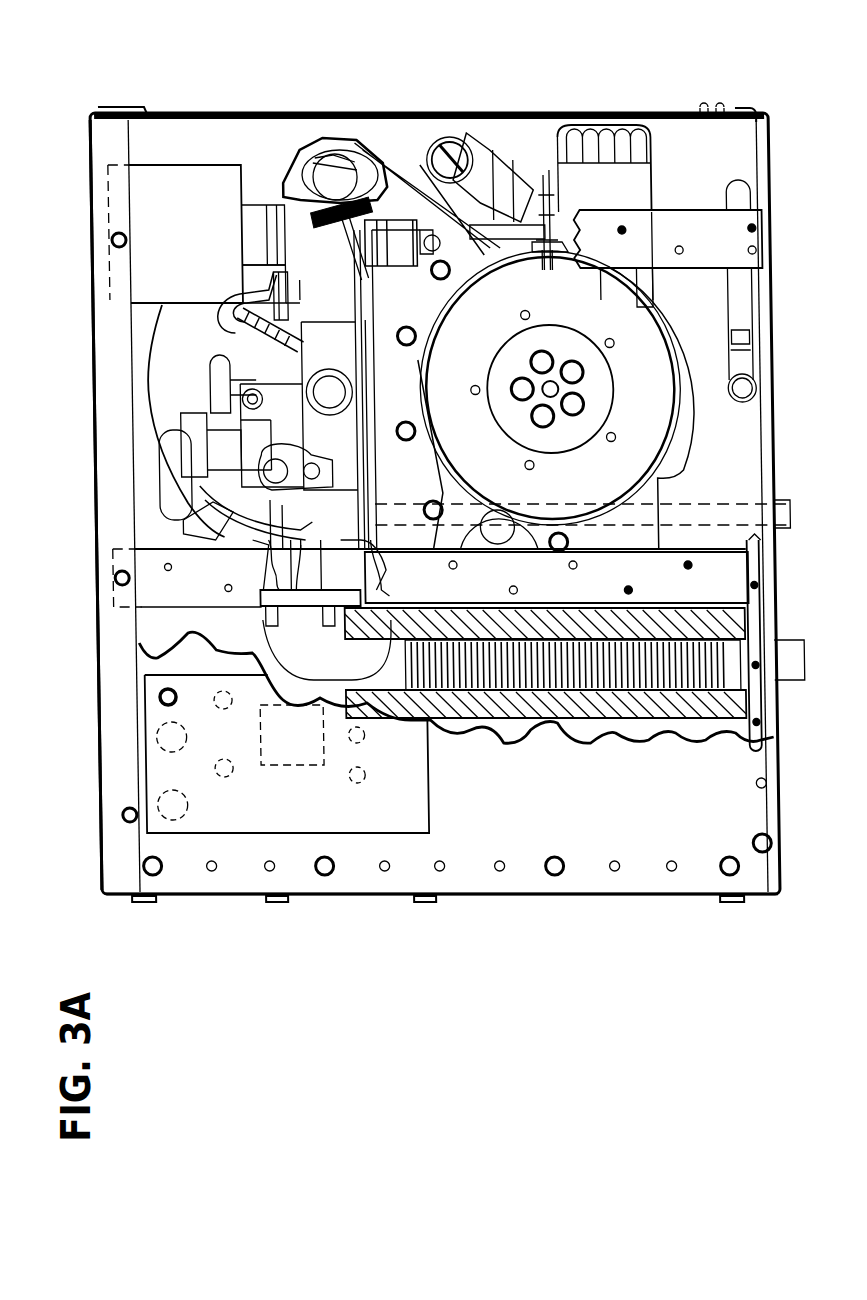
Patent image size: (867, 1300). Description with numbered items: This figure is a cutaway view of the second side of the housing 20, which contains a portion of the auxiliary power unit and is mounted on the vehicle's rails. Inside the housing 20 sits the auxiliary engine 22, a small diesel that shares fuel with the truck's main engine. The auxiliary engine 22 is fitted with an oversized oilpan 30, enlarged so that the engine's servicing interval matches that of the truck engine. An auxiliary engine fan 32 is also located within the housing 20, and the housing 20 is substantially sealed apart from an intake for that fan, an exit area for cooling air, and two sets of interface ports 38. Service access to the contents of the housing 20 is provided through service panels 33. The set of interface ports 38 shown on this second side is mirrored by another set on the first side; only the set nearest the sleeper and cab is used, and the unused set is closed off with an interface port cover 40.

The housing 20 is at (104, 158).
The auxiliary engine 22 is at (425, 206).
The oversized oilpan 30 is at (701, 297).
The auxiliary engine fan 32 is at (164, 302).
The service panels 33 is at (604, 112).
The interface ports 38 is at (173, 805).
The interface port cover 40 is at (152, 672).